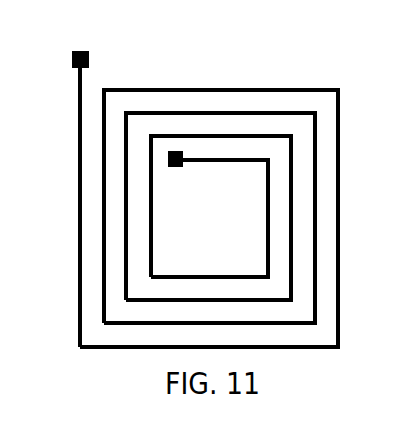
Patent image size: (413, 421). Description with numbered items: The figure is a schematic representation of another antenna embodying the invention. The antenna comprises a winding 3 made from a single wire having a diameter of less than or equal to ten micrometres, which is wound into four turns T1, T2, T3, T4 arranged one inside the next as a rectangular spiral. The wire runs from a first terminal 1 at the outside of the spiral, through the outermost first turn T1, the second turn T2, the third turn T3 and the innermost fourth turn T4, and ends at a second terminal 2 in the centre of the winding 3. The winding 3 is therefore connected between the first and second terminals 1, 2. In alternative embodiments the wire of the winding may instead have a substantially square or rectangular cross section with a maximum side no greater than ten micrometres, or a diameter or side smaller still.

The first terminal 1 is at (71, 60).
The second terminal 2 is at (178, 168).
The winding 3 is at (238, 197).
The first turn T1 is at (338, 176).
The second turn T2 is at (315, 215).
The third turn T3 is at (291, 252).
The fourth turn T4 is at (268, 263).